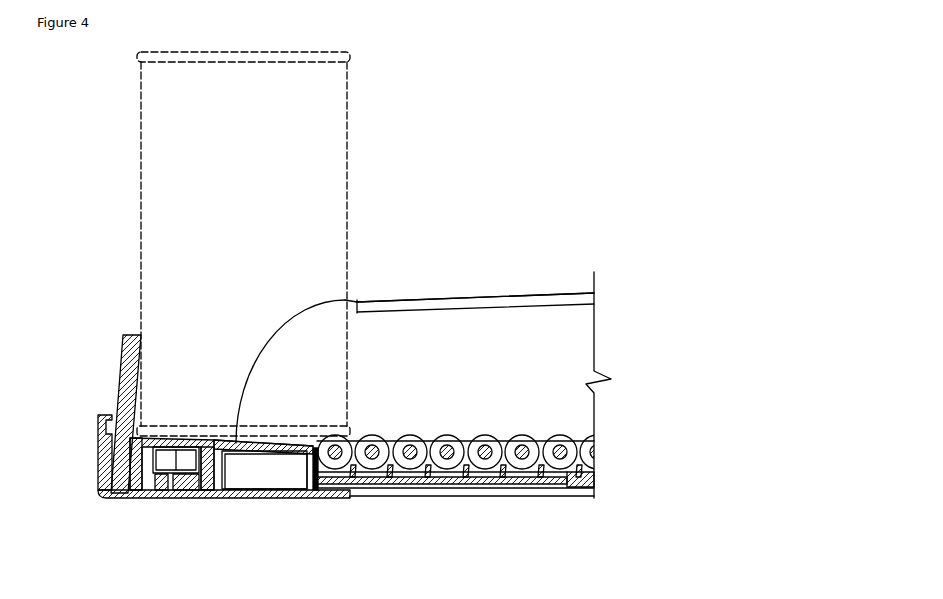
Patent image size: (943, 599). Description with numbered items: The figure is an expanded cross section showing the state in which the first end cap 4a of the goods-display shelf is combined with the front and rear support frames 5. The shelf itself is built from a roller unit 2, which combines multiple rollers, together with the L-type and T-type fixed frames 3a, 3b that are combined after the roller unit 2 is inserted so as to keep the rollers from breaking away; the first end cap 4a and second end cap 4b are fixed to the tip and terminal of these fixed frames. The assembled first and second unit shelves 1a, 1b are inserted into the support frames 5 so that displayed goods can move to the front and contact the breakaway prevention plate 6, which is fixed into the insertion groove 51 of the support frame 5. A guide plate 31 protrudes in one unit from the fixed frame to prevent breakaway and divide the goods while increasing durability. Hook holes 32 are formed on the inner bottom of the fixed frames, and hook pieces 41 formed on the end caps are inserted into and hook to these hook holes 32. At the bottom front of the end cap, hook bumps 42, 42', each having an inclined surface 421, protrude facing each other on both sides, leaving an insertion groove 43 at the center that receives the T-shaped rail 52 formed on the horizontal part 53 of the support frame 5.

The No.1 unit shelf 1a is at (399, 281).
The No.2 unit shelf 1b is at (434, 284).
The roller unit 2 is at (477, 424).
The L-type fixed frame 3a is at (429, 506).
The T-type fixed frame 3b is at (472, 500).
The No.1 end cap 4a is at (262, 434).
The No.2 end cap 4b is at (291, 437).
The front and rear support frame 5 is at (214, 486).
The breakaway prevention plate 6 is at (121, 362).
The guide plate 31 is at (282, 353).
The hook hole 32 is at (318, 497).
The hook piece 41 is at (312, 499).
The hook bump 42 is at (172, 482).
The hook bump 42' is at (145, 485).
The insertion groove 43 is at (220, 499).
The insertion groove 51 is at (115, 499).
The T-shaped rail 52 is at (170, 499).
The horizontal part 53 is at (213, 499).
The inclined surface 421 is at (180, 490).